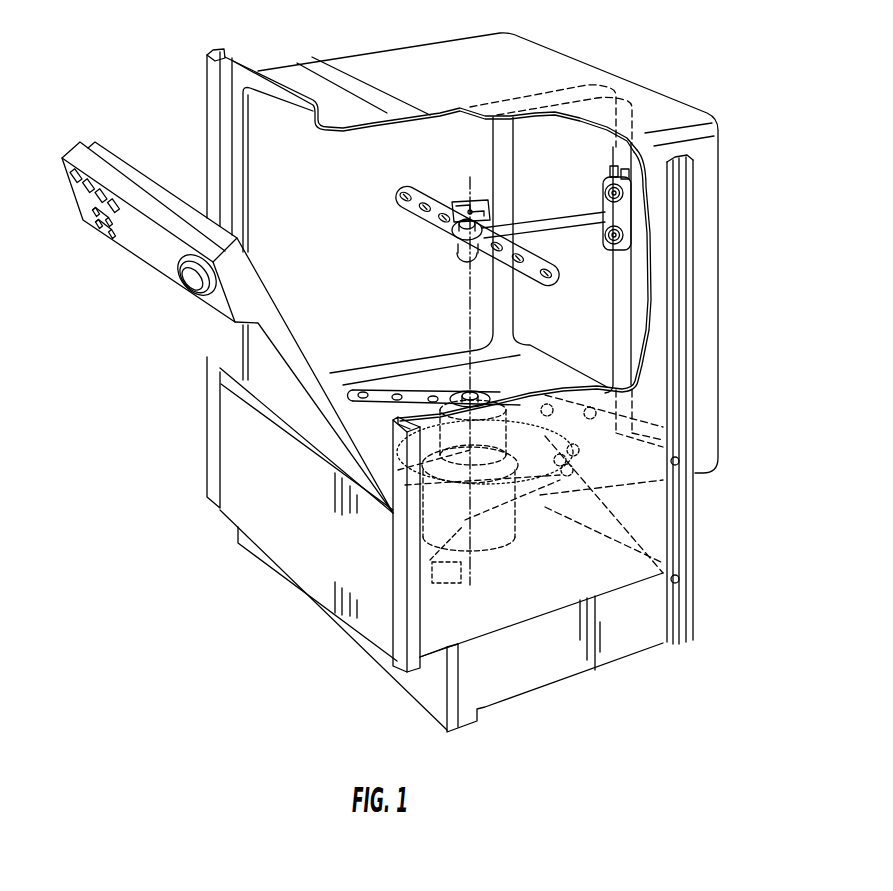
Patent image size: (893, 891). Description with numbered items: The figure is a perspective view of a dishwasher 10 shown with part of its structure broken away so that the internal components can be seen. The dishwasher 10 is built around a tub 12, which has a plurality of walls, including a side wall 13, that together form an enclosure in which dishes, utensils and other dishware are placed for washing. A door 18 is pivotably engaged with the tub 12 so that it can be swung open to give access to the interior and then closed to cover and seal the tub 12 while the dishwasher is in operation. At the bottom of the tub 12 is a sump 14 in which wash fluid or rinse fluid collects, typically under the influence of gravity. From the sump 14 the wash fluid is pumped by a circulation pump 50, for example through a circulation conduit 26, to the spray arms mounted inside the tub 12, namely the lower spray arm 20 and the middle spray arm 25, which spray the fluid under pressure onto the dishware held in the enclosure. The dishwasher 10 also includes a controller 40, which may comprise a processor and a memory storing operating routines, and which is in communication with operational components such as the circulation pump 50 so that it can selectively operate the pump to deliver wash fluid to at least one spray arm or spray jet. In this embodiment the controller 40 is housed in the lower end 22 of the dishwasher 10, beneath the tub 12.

The dishwasher 10 is at (160, 43).
The tub 12 is at (513, 58).
The side wall 13 is at (268, 123).
The sump 14 is at (519, 544).
The door 18 is at (203, 323).
The lower spray arm 20 is at (413, 395).
The lower end 22 is at (533, 595).
The middle spray arm 25 is at (410, 203).
The circulation conduit 26 is at (620, 283).
The controller 40 is at (447, 570).
The circulation pump 50 is at (448, 520).